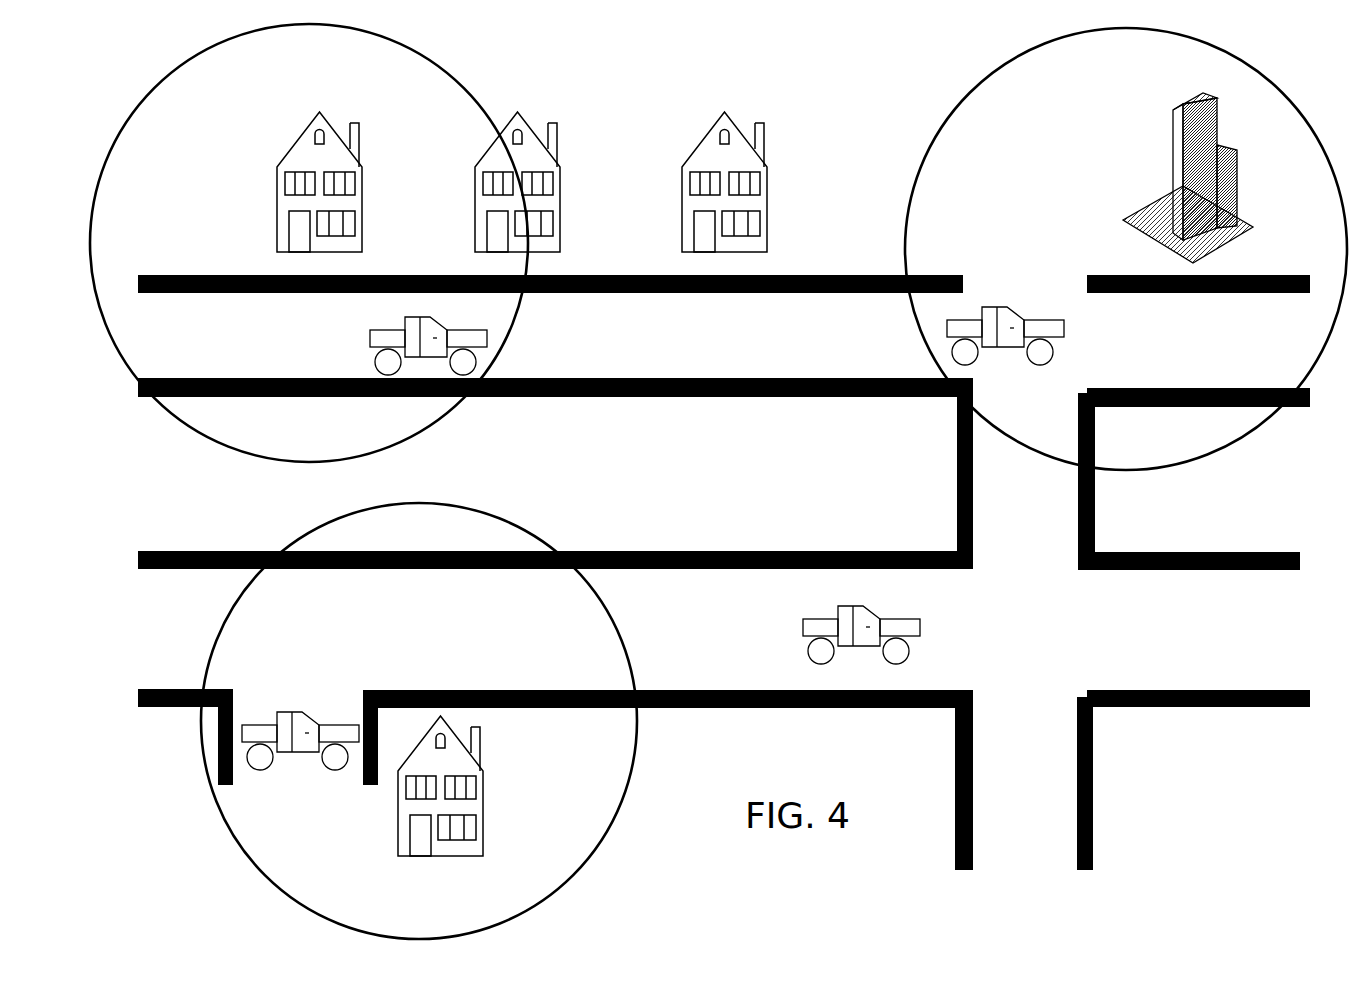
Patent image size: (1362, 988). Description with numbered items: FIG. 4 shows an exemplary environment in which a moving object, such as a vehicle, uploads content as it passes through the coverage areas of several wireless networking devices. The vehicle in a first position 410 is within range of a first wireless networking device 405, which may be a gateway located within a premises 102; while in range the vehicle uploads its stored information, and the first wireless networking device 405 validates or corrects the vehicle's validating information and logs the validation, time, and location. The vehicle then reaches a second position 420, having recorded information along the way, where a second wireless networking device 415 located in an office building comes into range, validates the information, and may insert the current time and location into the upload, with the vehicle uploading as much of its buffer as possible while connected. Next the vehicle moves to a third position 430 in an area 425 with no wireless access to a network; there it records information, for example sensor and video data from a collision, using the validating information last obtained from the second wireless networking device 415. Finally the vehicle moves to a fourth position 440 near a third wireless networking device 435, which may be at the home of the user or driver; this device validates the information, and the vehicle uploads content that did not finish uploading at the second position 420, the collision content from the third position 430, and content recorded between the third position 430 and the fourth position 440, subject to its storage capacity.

The premises 102 is at (336, 182).
The first wireless networking device 405 is at (364, 182).
The first position 410 is at (488, 337).
The second wireless networking device 415 is at (1137, 147).
The second position 420 is at (1057, 328).
The area 425 is at (929, 577).
The third position 430 is at (805, 621).
The third wireless networking device 435 is at (485, 832).
The fourth position 440 is at (318, 712).